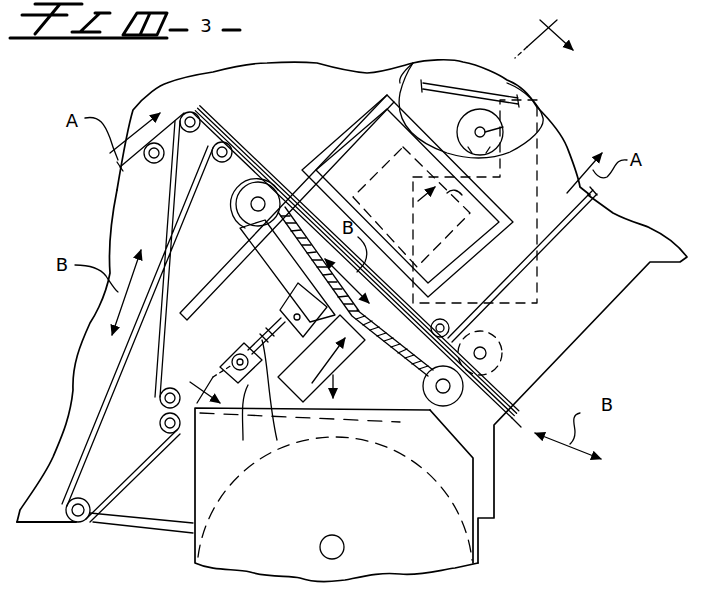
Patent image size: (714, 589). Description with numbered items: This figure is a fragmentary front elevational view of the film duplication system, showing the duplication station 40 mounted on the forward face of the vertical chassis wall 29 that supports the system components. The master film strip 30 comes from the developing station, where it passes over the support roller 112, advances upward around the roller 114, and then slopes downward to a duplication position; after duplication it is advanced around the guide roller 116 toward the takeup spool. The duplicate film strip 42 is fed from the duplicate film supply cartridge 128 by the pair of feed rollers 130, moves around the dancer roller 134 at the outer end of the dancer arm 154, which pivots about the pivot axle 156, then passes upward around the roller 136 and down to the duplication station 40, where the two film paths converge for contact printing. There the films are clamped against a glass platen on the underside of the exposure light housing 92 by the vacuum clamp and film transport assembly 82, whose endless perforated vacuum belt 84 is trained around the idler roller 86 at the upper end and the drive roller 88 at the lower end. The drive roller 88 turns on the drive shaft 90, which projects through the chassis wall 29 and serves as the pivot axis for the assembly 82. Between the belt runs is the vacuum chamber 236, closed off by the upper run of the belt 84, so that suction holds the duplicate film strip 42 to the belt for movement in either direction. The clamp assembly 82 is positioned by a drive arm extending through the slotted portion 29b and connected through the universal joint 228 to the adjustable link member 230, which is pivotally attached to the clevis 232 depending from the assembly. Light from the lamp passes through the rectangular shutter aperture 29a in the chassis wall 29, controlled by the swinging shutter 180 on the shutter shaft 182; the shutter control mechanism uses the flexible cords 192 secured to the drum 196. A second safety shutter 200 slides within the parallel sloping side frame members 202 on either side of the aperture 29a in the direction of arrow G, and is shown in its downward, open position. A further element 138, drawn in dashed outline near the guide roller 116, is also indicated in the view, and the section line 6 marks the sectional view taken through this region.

The section line 6- 6 is at (384, 208).
The chassis wall 29 is at (583, 248).
The shutter aperture 29a is at (453, 197).
The slotted portion 29b is at (257, 410).
The master film strip 30 is at (120, 165).
The film duplication station 40 is at (364, 72).
The duplicate film strip 42 is at (120, 368).
The vacuum clamp and film transport assembly 82 is at (321, 358).
The perforated vacuum belt 84 is at (266, 262).
The idler roller 86 is at (240, 213).
The drive roller 88 is at (444, 401).
The drive shaft 90 is at (437, 406).
The exposure light housing 92 is at (418, 64).
The support roller 112 is at (150, 162).
The roller 114 is at (187, 133).
The guide roller 116 is at (447, 322).
The duplicate film supply cartridge 128 is at (478, 537).
The feed rollers 130 is at (163, 387).
The dancer roller 134 is at (74, 523).
The roller 136 is at (236, 154).
The roller 138 is at (507, 332).
The dancer arm 154 is at (137, 524).
The pivot axle 156 is at (345, 546).
The swinging shutter 180 is at (528, 160).
The shutter shaft 182 is at (530, 114).
The flexible cords 192 is at (447, 93).
The drum 196 is at (547, 127).
The safety shutter 200 is at (337, 168).
The side frame members 202 is at (200, 290).
The universal joint 228 is at (234, 349).
The link member 230 is at (278, 425).
The clevis 232 is at (290, 297).
The vacuum chamber 236 is at (405, 350).
The arrow G is at (406, 212).